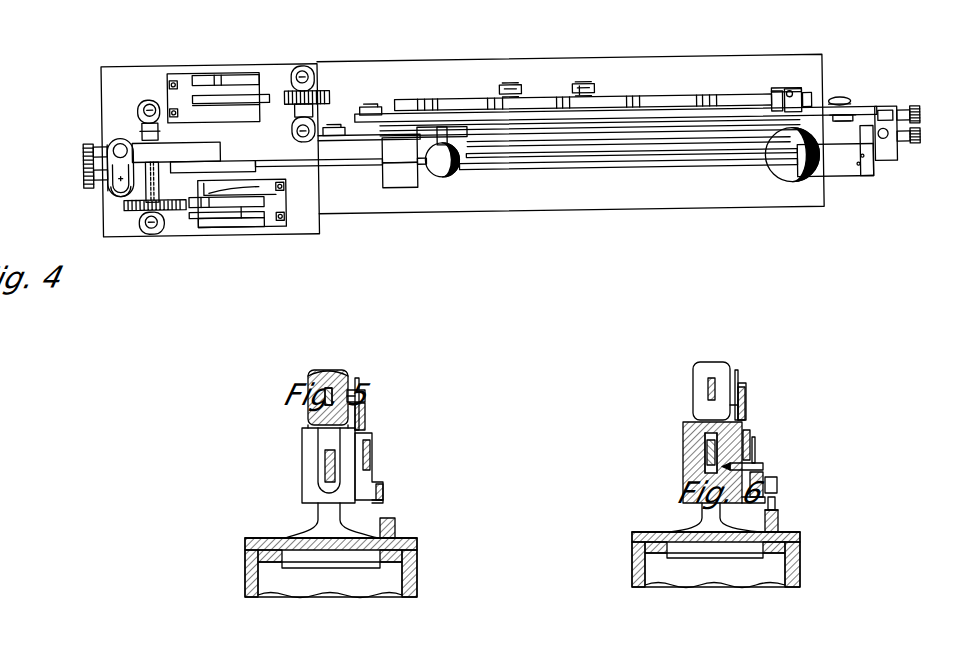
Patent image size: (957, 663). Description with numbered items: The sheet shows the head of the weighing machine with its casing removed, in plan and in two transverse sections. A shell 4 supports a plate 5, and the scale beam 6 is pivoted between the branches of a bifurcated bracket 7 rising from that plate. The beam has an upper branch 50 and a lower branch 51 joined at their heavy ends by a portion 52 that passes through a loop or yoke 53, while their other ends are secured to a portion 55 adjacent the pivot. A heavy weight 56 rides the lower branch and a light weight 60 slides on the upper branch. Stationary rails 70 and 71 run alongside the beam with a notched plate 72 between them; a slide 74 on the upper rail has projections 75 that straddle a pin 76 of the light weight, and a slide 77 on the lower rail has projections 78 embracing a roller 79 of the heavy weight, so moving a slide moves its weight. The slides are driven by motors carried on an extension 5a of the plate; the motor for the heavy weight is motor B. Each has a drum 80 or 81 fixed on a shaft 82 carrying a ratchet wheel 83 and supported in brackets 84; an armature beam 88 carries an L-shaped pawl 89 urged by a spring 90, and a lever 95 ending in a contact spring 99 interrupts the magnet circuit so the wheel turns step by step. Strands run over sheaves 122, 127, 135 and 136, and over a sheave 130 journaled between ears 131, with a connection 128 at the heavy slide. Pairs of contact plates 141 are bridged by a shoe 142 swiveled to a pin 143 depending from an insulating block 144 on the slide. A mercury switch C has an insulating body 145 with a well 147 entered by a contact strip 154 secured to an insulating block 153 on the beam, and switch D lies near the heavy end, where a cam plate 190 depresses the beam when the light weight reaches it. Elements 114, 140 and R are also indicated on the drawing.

In FIG. 5, the shell 4 is at (331, 568).
In FIG. 6, the shell 4 is at (716, 560).
In FIG. 4, the plate 5 is at (442, 240).
In FIG. 5, the plate 5 is at (270, 538).
In FIG. 6, the plate 5 is at (648, 532).
In FIG. 4, the extension of the plate 5a is at (236, 222).
In FIG. 4, the scale beam 6 is at (792, 235).
In FIG. 4, the bifurcated bracket 7 is at (402, 180).
In FIG. 5, the bifurcated bracket 7 is at (318, 515).
In FIG. 6, the bifurcated bracket 7 is at (700, 511).
In FIG. 4, the upper branch 50 is at (745, 152).
In FIG. 4, the lower branch 51 is at (708, 168).
In FIG. 5, the lower branch 51 is at (312, 388).
In FIG. 6, the lower branch 51 is at (700, 382).
In FIG. 4, the portion 52 is at (888, 165).
In FIG. 6, the portion 52 is at (695, 424).
In FIG. 4, the loop or yoke 53 is at (870, 180).
In FIG. 4, the portion of the beam 55 is at (226, 158).
In FIG. 4, the heavy weight 56 is at (775, 165).
In FIG. 4, the light weight 60 is at (458, 167).
In FIG. 5, the light weight 60 is at (320, 370).
In FIG. 6, the light weight 60 is at (716, 362).
In FIG. 4, the rail 70 is at (618, 135).
In FIG. 5, the rail 70 is at (366, 400).
In FIG. 6, the rail 70 is at (744, 410).
In FIG. 4, the rail 71 is at (683, 104).
In FIG. 5, the rail 71 is at (380, 498).
In FIG. 6, the rail 71 is at (745, 500).
In FIG. 4, the plate 72 is at (682, 133).
In FIG. 5, the plate 72 is at (372, 445).
In FIG. 6, the plate 72 is at (750, 433).
In FIG. 4, the slide 74 is at (399, 150).
In FIG. 5, the slide 74 is at (366, 414).
In FIG. 6, the slide 74 is at (746, 402).
In FIG. 4, the projections 75 is at (460, 136).
In FIG. 5, the projections 75 is at (355, 378).
In FIG. 6, the projections 75 is at (738, 375).
In FIG. 4, the pin 76 is at (500, 135).
In FIG. 5, the pin 76 is at (363, 390).
In FIG. 6, the pin 76 is at (746, 390).
In FIG. 4, the slide 77 is at (850, 110).
In FIG. 6, the slide 77 is at (764, 480).
In FIG. 4, the projections 78 is at (775, 104).
In FIG. 6, the projections 78 is at (756, 448).
In FIG. 4, the roller 79 is at (796, 92).
In FIG. 6, the roller 79 is at (763, 466).
In FIG. 4, the drum 80 is at (196, 136).
In FIG. 4, the drum 81 is at (290, 103).
In FIG. 4, the shaft 82 is at (158, 178).
In FIG. 4, the ratchet wheel 83 is at (298, 64).
In FIG. 4, the brackets 84 is at (152, 94).
In FIG. 4, the armature beam 88 is at (285, 208).
In FIG. 4, the L-shaped pawl 89 is at (283, 181).
In FIG. 4, the spring 90 is at (285, 204).
In FIG. 4, the lever 95 is at (195, 214).
In FIG. 4, the contact spring 99 is at (222, 72).
In FIG. 6, the stem 114 is at (776, 504).
In FIG. 4, the sheave 122 is at (334, 124).
In FIG. 4, the sheave 127 is at (852, 100).
In FIG. 4, the connection 128 is at (858, 120).
In FIG. 4, the sheave 130 is at (592, 82).
In FIG. 4, the ears 131 is at (572, 90).
In FIG. 4, the sheave 135 is at (514, 82).
In FIG. 4, the sheave 136 is at (371, 103).
In FIG. 5, the sheave 136 is at (383, 486).
In FIG. 4, the toothed bar 140 is at (468, 97).
In FIG. 5, the toothed bar 140 is at (395, 526).
In FIG. 6, the toothed bar 140 is at (779, 528).
In FIG. 4, the contact points or plates 141 is at (645, 97).
In FIG. 6, the contact shoe 142 is at (779, 518).
In FIG. 4, the pin 143 is at (783, 94).
In FIG. 4, the block of insulating material 144 is at (812, 98).
In FIG. 6, the block of insulating material 144 is at (778, 488).
In FIG. 4, the body 145 is at (118, 130).
In FIG. 4, the well 147 is at (108, 188).
In FIG. 4, the block of insulating material 153 is at (222, 117).
In FIG. 4, the contact strip 154 is at (86, 178).
In FIG. 4, the cam plate 190 is at (845, 170).
In FIG. 4, the motor B is at (183, 72).
In FIG. 4, the switch C is at (112, 135).
In FIG. 4, the switch D is at (900, 148).
In FIG. 4, the rack unit R is at (245, 186).